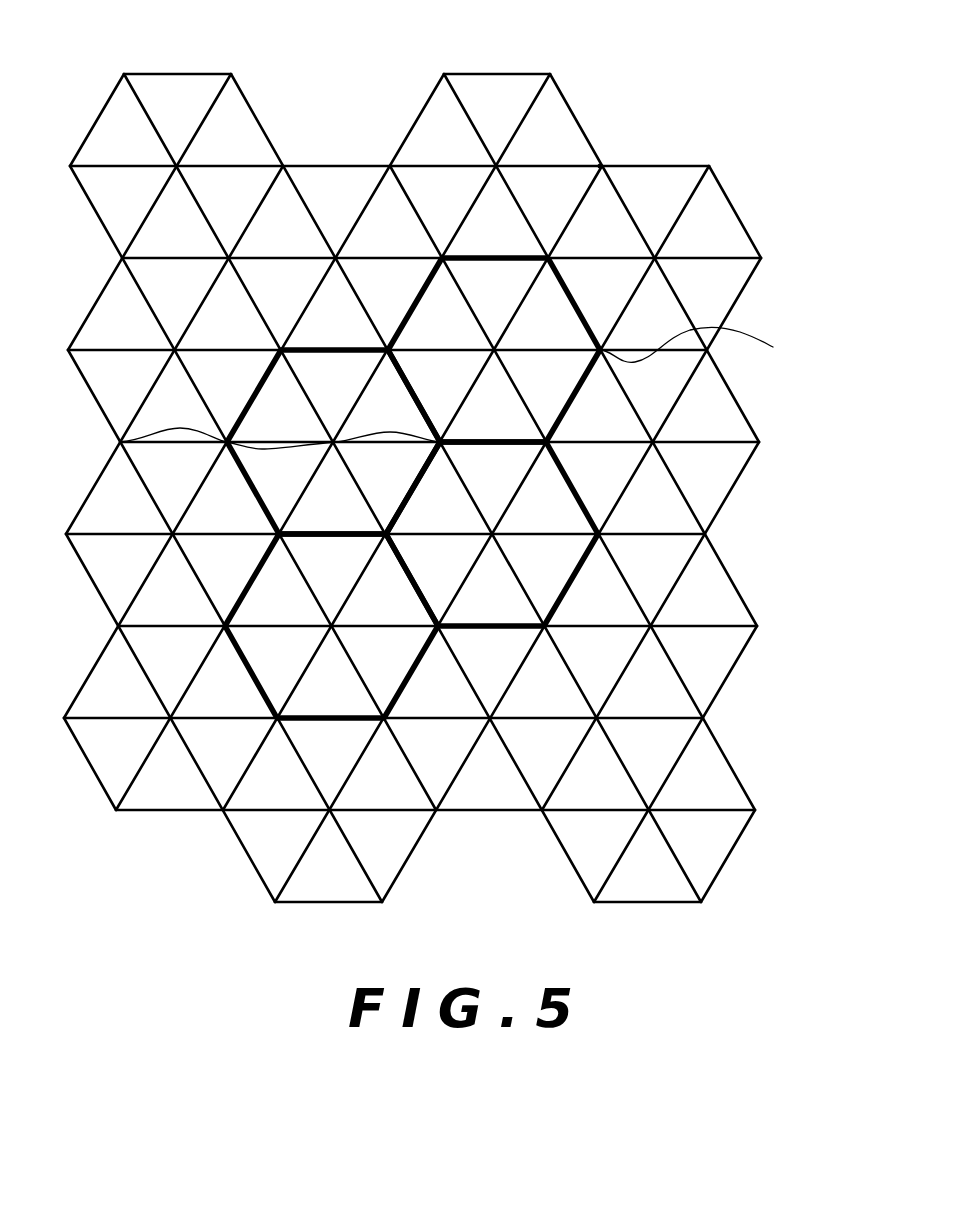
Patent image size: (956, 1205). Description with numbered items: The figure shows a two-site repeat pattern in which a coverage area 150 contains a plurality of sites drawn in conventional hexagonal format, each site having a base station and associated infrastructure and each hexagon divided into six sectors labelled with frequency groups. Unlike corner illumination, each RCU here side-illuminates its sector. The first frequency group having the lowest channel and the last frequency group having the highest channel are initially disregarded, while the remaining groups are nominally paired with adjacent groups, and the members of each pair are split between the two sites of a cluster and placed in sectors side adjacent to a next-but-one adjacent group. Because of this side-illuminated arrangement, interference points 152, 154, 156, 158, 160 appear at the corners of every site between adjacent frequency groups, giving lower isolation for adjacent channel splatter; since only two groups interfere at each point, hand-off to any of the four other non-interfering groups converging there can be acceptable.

The coverage area 150 is at (208, 31).
The interference point 152 is at (548, 258).
The interference point 154 is at (708, 348).
The interference point 156 is at (442, 258).
The interference point 158 is at (388, 350).
The interference point 160 is at (120, 442).